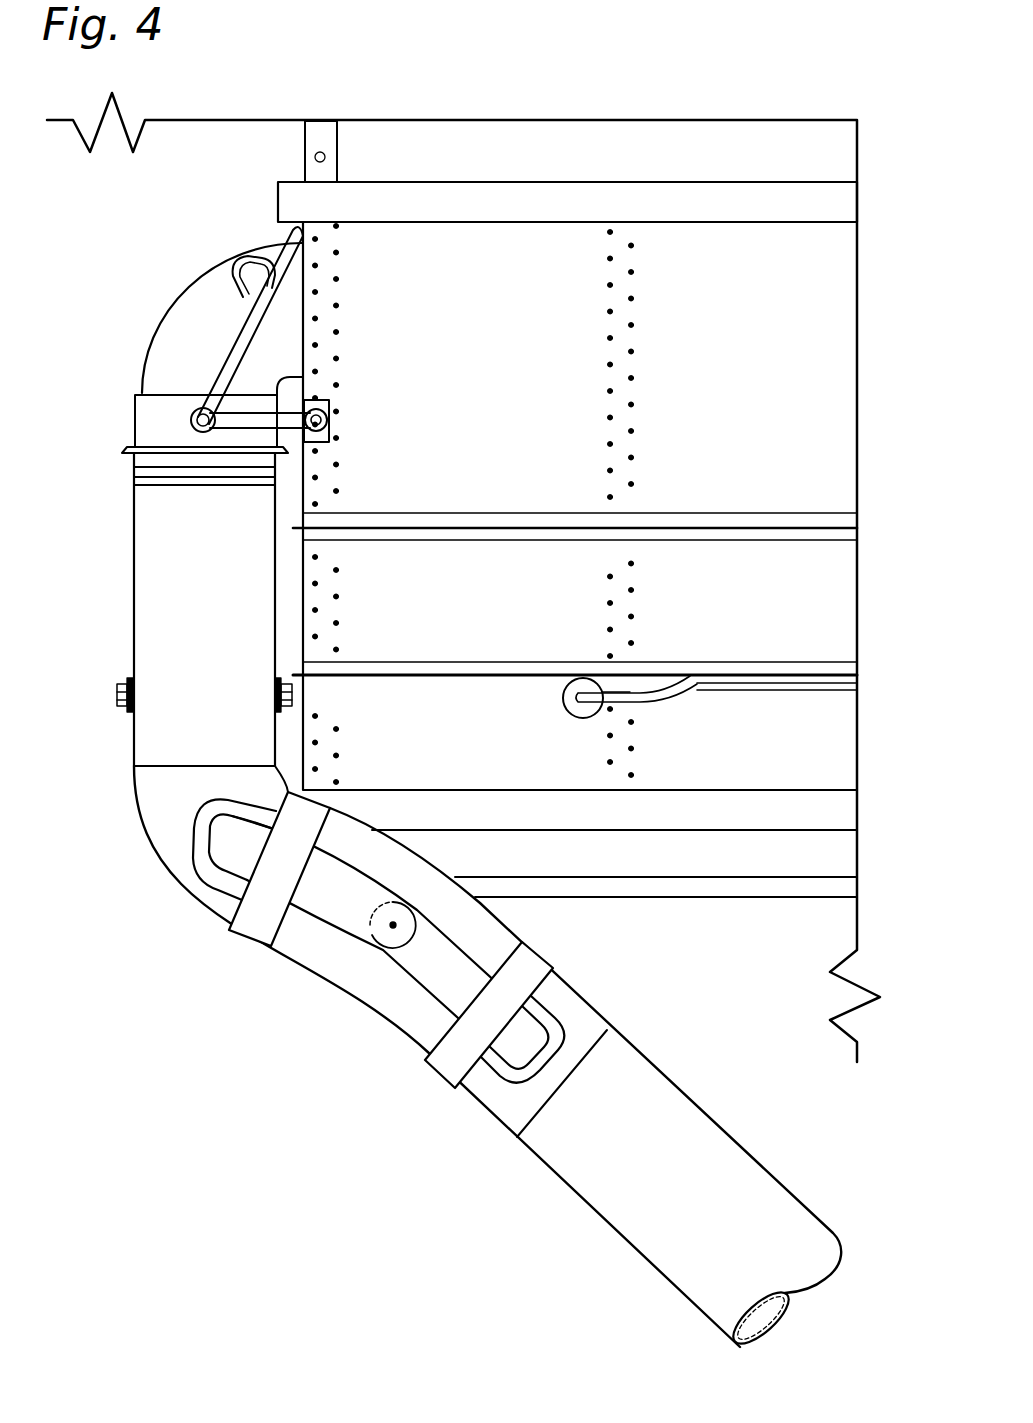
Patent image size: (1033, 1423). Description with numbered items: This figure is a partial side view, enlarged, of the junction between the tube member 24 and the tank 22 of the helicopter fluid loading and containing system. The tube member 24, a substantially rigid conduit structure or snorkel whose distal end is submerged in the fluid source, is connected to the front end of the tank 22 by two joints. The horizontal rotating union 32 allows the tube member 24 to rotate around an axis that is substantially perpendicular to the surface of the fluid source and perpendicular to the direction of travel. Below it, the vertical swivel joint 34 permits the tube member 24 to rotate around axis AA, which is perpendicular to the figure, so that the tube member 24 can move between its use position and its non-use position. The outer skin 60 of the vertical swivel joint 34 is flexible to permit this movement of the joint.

The tank 22 is at (838, 327).
The tube member 24 is at (755, 1173).
The horizontal rotating union 32 is at (132, 603).
The vertical swivel joint 34 is at (283, 960).
The outer skin 60 is at (412, 1047).
The axis AA is at (393, 928).